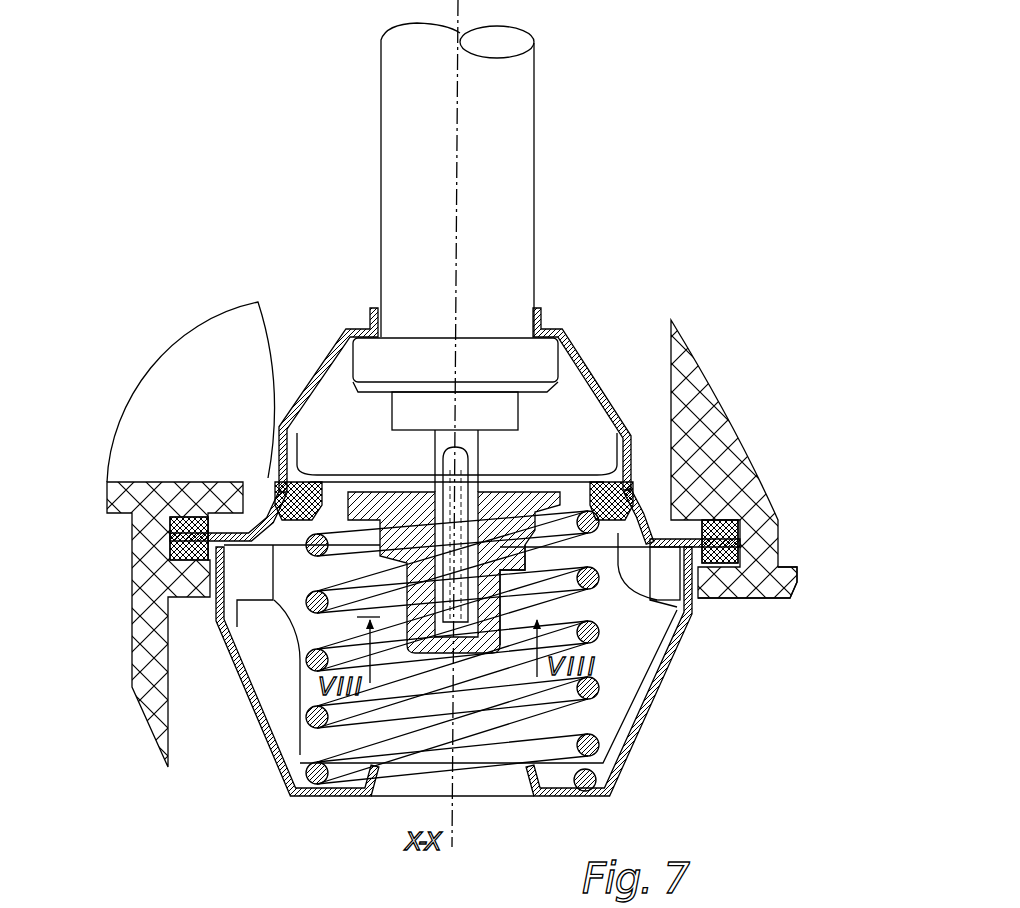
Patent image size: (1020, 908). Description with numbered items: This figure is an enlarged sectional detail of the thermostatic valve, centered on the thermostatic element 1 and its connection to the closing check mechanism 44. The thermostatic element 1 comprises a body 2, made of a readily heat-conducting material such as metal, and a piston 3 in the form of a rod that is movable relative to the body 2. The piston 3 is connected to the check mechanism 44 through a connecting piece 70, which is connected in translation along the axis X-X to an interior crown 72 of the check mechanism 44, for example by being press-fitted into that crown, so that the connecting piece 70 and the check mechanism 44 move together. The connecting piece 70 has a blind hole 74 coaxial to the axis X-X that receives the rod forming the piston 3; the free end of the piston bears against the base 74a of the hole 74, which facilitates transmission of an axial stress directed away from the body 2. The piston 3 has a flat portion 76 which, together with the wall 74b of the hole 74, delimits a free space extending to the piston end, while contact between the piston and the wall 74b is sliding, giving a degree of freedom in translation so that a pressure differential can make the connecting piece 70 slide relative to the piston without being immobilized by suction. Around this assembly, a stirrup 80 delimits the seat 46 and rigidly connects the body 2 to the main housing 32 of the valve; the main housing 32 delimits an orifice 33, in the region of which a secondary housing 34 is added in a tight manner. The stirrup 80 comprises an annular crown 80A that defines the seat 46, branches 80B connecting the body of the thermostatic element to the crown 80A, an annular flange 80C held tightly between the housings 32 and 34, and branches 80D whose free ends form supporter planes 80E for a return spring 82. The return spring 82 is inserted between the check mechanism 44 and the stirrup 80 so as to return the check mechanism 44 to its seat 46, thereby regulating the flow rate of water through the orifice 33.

The thermostatic element 1 is at (370, 222).
The body 2 is at (517, 163).
The piston 3 is at (273, 410).
The main housing 32 is at (720, 482).
The orifice 33 is at (692, 617).
The secondary housing 34 is at (795, 585).
The closing check mechanism 44 is at (257, 642).
The seat 46 is at (282, 485).
The connecting piece 70 is at (595, 643).
The interior crown 72 is at (367, 541).
The blind hole 74 is at (480, 477).
The base of the hole 74a is at (450, 655).
The wall of the hole 74b is at (483, 657).
The flat portion 76 is at (455, 455).
The stirrup 80 is at (612, 380).
The annular crown 80A is at (650, 513).
The branches 80B is at (592, 355).
The annular flange 80C is at (760, 540).
The branches 80D is at (640, 742).
The supporter planes 80E is at (332, 796).
The return spring 82 is at (600, 622).